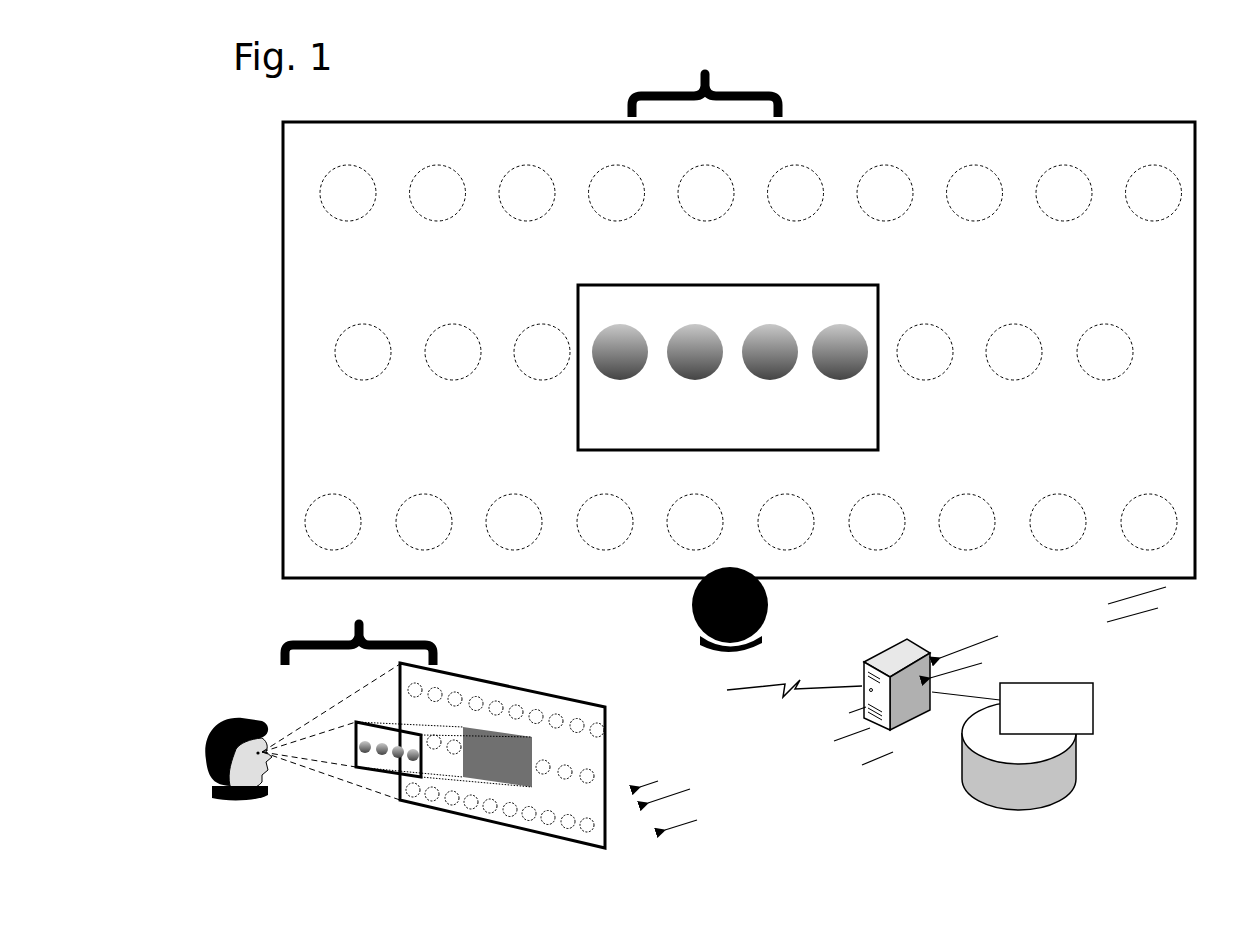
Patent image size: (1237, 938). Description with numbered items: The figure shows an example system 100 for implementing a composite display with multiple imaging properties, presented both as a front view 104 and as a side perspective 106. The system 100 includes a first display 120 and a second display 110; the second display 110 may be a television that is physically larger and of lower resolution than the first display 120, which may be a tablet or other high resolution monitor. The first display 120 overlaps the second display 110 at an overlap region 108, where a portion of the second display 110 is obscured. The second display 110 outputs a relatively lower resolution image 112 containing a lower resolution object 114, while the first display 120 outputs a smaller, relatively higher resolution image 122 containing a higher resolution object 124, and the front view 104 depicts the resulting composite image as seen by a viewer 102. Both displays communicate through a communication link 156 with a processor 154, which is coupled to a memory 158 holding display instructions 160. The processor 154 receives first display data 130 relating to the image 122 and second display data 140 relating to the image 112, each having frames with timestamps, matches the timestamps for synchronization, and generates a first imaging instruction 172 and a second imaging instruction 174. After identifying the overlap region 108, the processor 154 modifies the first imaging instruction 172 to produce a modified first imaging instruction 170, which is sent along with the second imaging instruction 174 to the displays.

The system 100 is at (528, 613).
The viewer 102 is at (768, 610).
The front view 104 is at (705, 81).
The side perspective 106 is at (359, 631).
The overlap region 108 is at (578, 278).
The second display 110 is at (543, 715).
The image 112 is at (419, 265).
The lower resolution object 114 is at (545, 335).
The first display 120 is at (363, 737).
The image 122 is at (297, 692).
The higher resolution object 124 is at (838, 354).
The first display data 130 is at (1020, 617).
The second display data 140 is at (1063, 645).
The processor 154 is at (906, 722).
The communication link 156 is at (793, 700).
The memory 158 is at (966, 795).
The display instructions 160 is at (1093, 700).
The modified first imaging instruction 170 is at (738, 740).
The first imaging instruction 172 is at (753, 776).
The second imaging instruction 174 is at (792, 800).